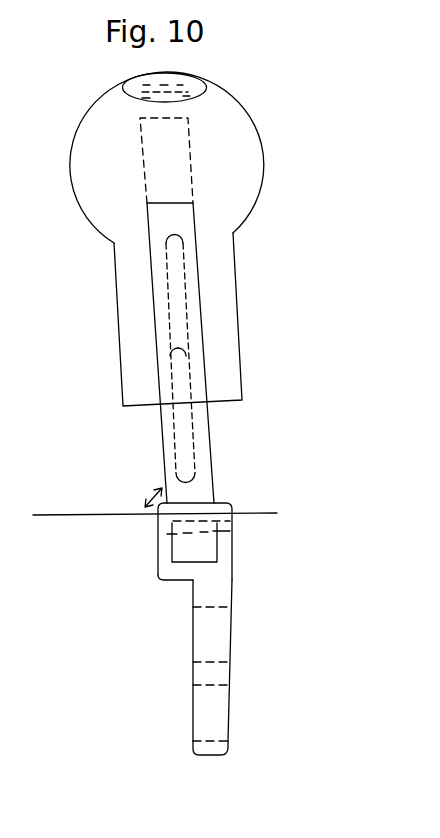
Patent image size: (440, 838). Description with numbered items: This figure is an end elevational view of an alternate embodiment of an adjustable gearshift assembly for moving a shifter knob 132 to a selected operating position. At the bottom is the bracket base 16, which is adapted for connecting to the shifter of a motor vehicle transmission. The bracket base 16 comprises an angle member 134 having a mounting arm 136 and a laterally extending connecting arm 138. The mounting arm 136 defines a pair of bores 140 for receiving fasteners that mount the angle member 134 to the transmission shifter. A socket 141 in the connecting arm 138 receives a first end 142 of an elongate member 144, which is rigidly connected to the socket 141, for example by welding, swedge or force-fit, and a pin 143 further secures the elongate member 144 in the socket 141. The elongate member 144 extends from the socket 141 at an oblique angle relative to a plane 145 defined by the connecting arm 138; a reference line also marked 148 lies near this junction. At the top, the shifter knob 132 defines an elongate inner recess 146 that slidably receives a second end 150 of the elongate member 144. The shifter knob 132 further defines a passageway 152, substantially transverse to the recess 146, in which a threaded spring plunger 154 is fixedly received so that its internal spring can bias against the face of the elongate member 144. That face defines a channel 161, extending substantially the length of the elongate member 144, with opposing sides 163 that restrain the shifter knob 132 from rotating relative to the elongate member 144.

The bracket base 16 is at (246, 581).
The shifter knob 132 is at (240, 97).
The angle member 134 is at (193, 673).
The mounting arm 136 is at (225, 755).
The connecting arm 138 is at (221, 507).
The bores 140 is at (193, 636).
The socket 141 is at (160, 567).
The first end 142 is at (182, 548).
The pin 143 is at (220, 530).
The elongate member 144 is at (162, 485).
The plane 145 is at (62, 514).
The elongate inner recess 146 is at (155, 175).
The neck 148 is at (160, 407).
The second end 150 is at (152, 219).
The passageway 152 is at (189, 352).
The spring plunger 154 is at (170, 358).
The channel 161 is at (175, 284).
The sides 163 is at (167, 273).